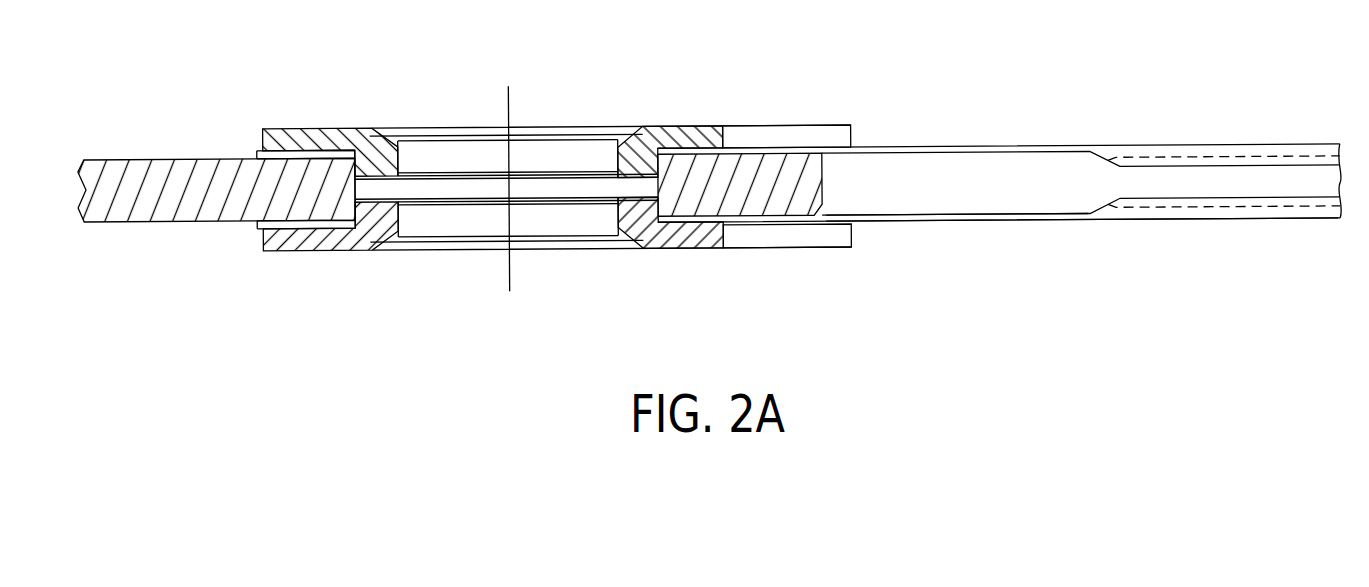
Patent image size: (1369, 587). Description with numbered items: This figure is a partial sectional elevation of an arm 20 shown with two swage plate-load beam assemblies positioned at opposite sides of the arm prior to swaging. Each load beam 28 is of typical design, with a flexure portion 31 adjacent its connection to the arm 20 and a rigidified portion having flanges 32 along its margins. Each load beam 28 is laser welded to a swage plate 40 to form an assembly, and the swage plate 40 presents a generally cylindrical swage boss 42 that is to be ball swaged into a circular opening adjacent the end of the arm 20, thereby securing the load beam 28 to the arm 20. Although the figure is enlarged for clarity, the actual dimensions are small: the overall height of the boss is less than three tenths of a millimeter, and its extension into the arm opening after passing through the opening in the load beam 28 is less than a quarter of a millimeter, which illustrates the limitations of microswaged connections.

The arm 20 is at (163, 154).
The swage boss 42 is at (609, 157).
The swage plate 40 is at (747, 125).
The load beam 28 is at (1057, 149).
The flexure portion 31 is at (933, 224).
The flanges 32 is at (1240, 162).